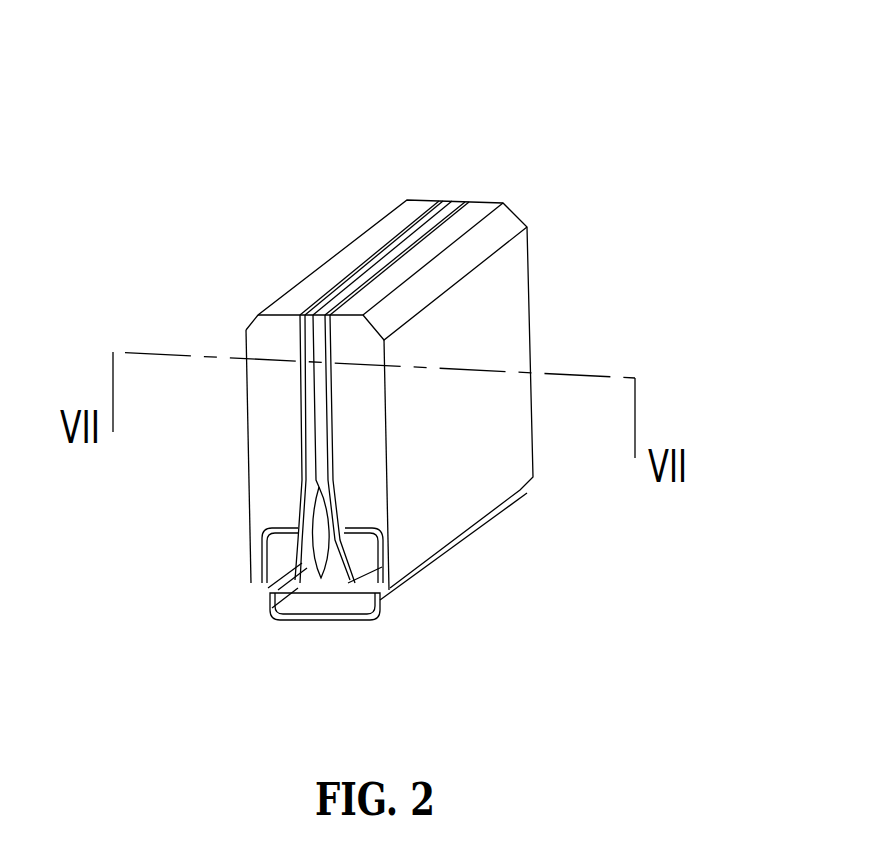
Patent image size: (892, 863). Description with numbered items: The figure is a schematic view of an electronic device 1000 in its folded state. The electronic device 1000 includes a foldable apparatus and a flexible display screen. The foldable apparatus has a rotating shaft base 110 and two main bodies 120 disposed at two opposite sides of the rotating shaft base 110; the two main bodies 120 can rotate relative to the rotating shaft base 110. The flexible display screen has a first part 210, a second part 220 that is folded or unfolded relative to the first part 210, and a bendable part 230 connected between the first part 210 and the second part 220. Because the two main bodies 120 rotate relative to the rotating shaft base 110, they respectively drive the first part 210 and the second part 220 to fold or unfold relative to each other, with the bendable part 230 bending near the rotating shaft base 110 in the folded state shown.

The electronic device 1000 is at (597, 90).
The rotating shaft base 110 is at (333, 620).
The main body 120 is at (277, 423).
The first part 210 is at (303, 472).
The second part 220 is at (337, 468).
The bendable part 230 is at (300, 592).